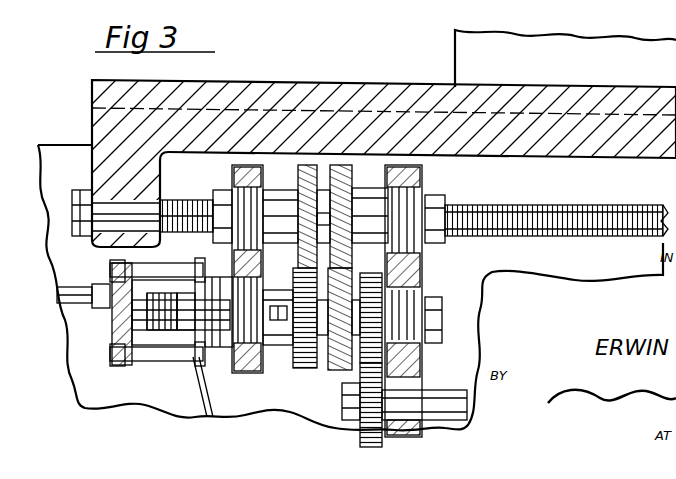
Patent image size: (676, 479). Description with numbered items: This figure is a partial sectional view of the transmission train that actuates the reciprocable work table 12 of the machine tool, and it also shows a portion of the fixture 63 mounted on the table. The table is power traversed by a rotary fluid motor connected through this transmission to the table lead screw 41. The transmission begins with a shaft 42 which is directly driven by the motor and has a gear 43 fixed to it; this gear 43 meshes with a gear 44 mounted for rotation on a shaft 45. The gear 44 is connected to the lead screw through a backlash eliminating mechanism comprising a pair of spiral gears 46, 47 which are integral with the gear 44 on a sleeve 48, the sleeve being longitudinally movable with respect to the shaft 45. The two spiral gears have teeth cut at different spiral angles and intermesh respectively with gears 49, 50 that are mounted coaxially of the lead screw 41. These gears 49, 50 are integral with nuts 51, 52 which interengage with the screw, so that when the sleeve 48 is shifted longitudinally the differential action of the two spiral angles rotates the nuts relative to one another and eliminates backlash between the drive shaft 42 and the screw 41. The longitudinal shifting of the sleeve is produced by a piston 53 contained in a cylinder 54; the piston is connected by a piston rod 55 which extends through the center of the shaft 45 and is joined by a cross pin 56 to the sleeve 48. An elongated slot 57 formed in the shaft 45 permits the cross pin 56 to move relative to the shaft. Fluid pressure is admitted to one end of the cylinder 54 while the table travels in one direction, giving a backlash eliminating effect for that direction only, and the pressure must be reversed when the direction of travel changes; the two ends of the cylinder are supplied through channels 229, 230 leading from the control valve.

The work table 12 is at (402, 96).
The table lead screw 41 is at (612, 222).
The shaft 42 is at (448, 390).
The gear 43 is at (360, 437).
The gear 44 is at (374, 285).
The shaft 45 is at (405, 292).
The spiral gear 46 is at (307, 370).
The spiral gear 47 is at (340, 371).
The sleeve 48 is at (268, 345).
The gear 49 is at (299, 165).
The gear 50 is at (334, 165).
The nut 51 is at (272, 200).
The nut 52 is at (370, 200).
The piston 53 is at (173, 353).
The cylinder 54 is at (120, 322).
The piston rod 55 is at (193, 340).
The cross pin 56 is at (280, 306).
The elongated slot 57 is at (277, 290).
The fixture 63 is at (520, 48).
The channel 229 is at (75, 287).
The channel 230 is at (196, 402).